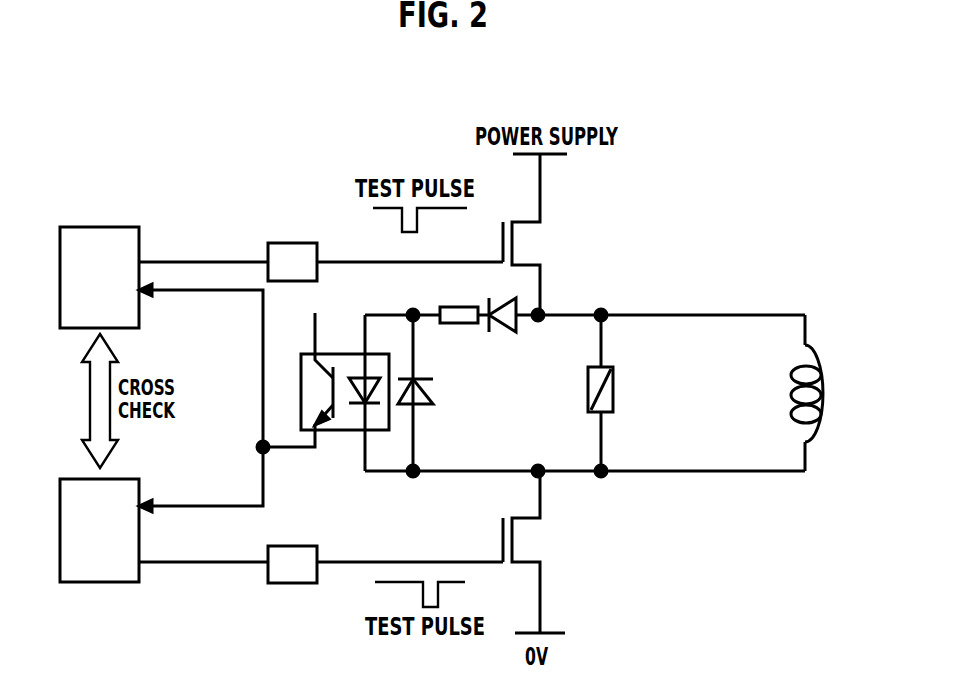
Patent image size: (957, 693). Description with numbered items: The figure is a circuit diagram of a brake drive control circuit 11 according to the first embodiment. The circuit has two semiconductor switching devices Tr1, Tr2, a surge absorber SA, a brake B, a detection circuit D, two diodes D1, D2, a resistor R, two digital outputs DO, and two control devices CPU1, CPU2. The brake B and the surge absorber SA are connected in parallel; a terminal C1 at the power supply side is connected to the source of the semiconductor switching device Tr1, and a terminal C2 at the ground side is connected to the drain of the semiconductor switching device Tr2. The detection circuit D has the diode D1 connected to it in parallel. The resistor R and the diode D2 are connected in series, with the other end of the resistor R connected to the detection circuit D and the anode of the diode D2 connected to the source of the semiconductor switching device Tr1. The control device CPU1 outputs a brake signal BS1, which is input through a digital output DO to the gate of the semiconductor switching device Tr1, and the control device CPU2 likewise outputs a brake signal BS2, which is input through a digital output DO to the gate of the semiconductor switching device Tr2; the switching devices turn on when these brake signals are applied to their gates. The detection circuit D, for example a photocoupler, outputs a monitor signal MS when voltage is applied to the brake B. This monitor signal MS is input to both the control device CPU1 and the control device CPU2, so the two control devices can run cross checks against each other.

The brake drive control circuit 11 is at (720, 195).
The control device CPU1 is at (99, 277).
The control device CPU2 is at (99, 530).
The digital output DO is at (292, 413).
The monitor signal MS is at (204, 398).
The semiconductor switching device Tr1 is at (539, 234).
The semiconductor switching device Tr2 is at (539, 552).
The brake signal BS1 is at (482, 282).
The brake signal BS2 is at (433, 547).
The terminal C1 is at (538, 315).
The terminal C2 is at (540, 471).
The resistor R is at (459, 331).
The diode D1 is at (431, 393).
The diode D2 is at (504, 332).
The detection circuit D is at (326, 386).
The surge absorber SA is at (614, 395).
The brake B is at (824, 392).